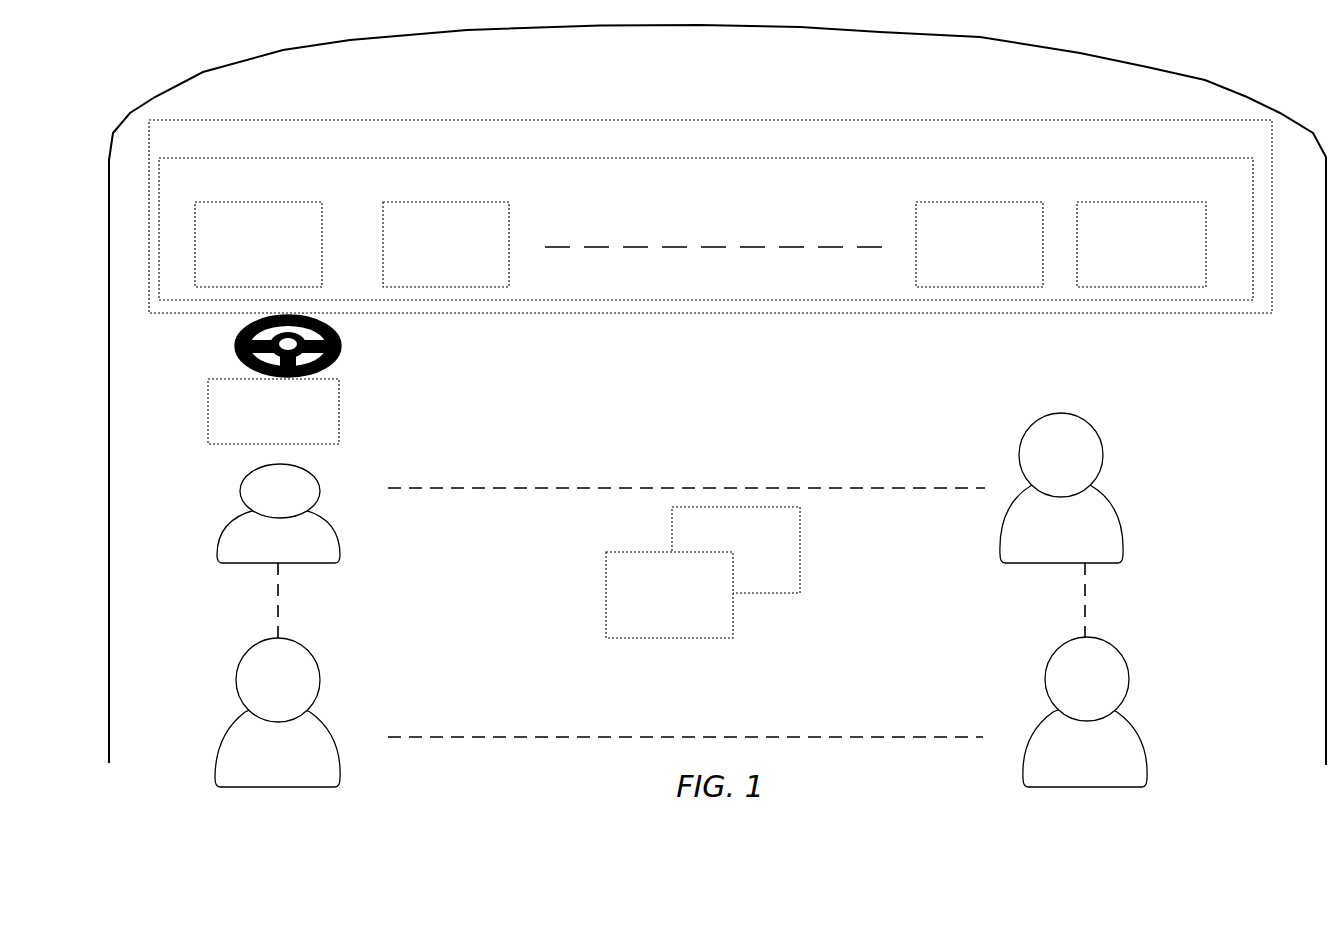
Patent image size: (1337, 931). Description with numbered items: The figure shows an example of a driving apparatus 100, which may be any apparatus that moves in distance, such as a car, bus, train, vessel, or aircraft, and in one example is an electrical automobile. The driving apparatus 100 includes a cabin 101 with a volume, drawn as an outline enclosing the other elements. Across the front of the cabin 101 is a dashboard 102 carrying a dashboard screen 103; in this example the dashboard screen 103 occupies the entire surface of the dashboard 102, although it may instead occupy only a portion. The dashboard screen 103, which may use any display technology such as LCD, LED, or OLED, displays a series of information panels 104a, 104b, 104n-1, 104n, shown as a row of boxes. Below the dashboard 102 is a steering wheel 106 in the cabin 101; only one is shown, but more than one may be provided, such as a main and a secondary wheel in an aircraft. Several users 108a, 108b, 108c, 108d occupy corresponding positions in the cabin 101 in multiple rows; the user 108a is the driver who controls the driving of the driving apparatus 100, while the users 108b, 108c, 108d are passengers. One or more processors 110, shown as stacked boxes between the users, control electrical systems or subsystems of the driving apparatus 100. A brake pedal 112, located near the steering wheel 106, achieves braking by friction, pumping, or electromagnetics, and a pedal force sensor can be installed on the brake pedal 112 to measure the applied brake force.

The driving apparatus 100 is at (1204, 80).
The cabin 101 is at (706, 60).
The dashboard 102 is at (795, 120).
The dashboard screen 103 is at (778, 158).
The information panel 104a is at (251, 203).
The information panel 104b is at (438, 203).
The information panel 104n-1 is at (975, 203).
The information panel 104n is at (1145, 203).
The steering wheel 106 is at (340, 363).
The user 108a is at (318, 486).
The user 108b is at (1084, 428).
The user 108c is at (315, 663).
The user 108d is at (1123, 663).
The processor 110 is at (681, 638).
The brake pedal 112 is at (273, 411).